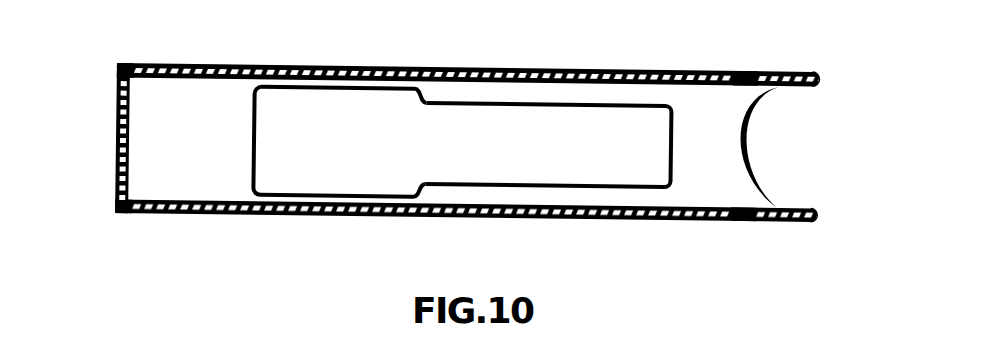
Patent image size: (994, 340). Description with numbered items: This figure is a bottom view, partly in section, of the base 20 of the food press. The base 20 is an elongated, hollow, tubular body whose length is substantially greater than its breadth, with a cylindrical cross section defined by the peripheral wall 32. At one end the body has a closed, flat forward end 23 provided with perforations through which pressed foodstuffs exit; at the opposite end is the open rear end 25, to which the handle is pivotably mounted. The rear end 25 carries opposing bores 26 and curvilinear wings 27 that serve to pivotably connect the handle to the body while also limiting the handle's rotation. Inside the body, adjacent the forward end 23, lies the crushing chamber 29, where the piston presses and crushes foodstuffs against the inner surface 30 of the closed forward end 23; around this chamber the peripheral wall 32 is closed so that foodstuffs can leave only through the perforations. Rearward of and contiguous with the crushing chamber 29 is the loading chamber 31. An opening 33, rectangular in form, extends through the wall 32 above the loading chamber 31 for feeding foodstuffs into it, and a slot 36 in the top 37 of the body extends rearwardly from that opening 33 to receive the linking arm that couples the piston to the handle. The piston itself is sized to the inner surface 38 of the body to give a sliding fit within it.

The base 20 is at (683, 51).
The forward end 23 is at (118, 98).
The rear end 25 is at (720, 145).
The bores 26 is at (743, 222).
The curvilinear wings 27 is at (800, 224).
The crushing chamber 29 is at (178, 137).
The inner surface 30 is at (133, 170).
The loading chamber 31 is at (332, 140).
The peripheral wall 32 is at (350, 213).
The opening 33 is at (393, 142).
The slot 36 is at (530, 143).
The top 37 is at (475, 93).
The inner surface 38 is at (195, 200).